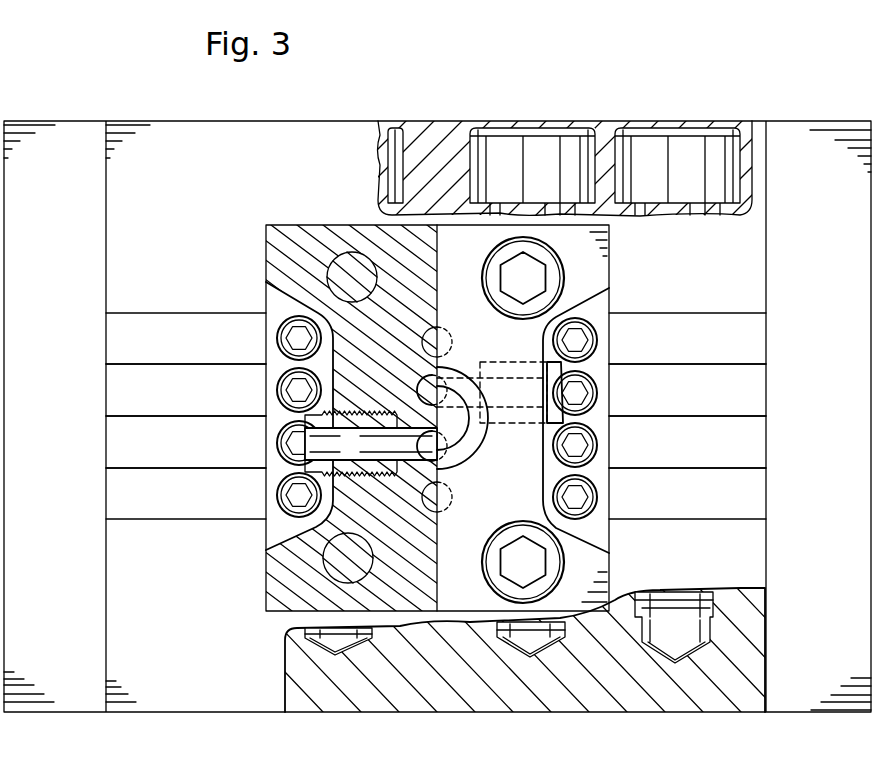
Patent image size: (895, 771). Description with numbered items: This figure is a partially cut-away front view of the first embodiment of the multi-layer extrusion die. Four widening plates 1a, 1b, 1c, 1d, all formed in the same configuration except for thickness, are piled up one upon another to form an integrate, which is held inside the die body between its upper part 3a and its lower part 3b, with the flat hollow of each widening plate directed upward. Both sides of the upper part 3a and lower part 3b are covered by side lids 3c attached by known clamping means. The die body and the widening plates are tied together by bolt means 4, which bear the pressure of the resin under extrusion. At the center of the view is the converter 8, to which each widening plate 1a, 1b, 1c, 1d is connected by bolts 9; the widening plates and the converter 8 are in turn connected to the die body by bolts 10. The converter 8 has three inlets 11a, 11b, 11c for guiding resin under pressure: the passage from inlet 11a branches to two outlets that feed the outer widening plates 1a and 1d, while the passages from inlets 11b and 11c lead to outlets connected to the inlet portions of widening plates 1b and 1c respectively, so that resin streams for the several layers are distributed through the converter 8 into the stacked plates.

The widening plate 1a is at (196, 359).
The widening plate 1b is at (198, 414).
The widening plate 1c is at (198, 466).
The widening plate 1d is at (198, 516).
The upper part 3a is at (450, 130).
The lower part 3b is at (480, 700).
The side lid 3c is at (42, 410).
The bolt means 4 is at (390, 130).
The converter 8 is at (511, 514).
The bolts 9 is at (290, 338).
The bolts 10 is at (345, 263).
The inlet 11a is at (447, 423).
The inlet 11b is at (551, 366).
The inlet 11c is at (341, 465).